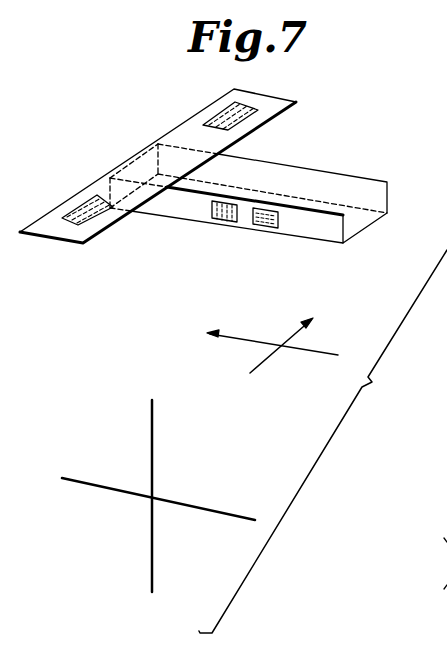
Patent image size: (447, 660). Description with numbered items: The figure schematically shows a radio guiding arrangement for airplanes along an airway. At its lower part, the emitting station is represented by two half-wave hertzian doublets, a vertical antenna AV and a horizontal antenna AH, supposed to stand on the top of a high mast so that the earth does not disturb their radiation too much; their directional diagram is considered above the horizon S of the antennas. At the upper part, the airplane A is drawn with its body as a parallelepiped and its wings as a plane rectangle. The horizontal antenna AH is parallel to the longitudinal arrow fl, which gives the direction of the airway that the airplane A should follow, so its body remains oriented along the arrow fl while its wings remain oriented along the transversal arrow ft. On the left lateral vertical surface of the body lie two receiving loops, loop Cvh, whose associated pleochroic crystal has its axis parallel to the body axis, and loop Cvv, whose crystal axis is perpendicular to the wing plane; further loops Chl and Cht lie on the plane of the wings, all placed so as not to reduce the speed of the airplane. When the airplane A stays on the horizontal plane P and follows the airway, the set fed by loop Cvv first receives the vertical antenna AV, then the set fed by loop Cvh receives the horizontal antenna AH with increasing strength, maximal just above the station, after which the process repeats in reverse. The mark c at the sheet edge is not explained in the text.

The airplane A is at (319, 170).
The loop antenna Cht is at (223, 111).
The loop antenna Chl is at (78, 206).
The loop antenna Cvh is at (210, 219).
The loop antenna Cvv is at (260, 230).
The transversal arrow ft is at (289, 340).
The longitudinal arrow fl is at (278, 347).
The vertical antenna AV is at (153, 447).
The horizontal antenna AH is at (223, 503).
The horizontal plane P is at (446, 345).
The horizon S is at (446, 383).
The element c is at (443, 657).